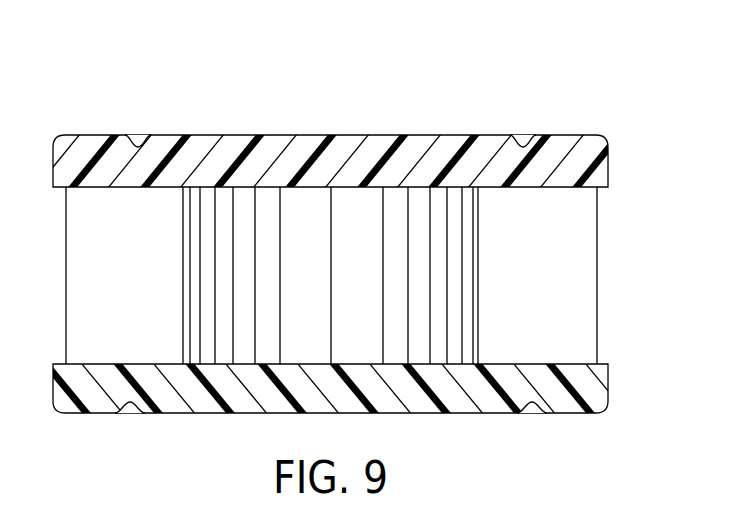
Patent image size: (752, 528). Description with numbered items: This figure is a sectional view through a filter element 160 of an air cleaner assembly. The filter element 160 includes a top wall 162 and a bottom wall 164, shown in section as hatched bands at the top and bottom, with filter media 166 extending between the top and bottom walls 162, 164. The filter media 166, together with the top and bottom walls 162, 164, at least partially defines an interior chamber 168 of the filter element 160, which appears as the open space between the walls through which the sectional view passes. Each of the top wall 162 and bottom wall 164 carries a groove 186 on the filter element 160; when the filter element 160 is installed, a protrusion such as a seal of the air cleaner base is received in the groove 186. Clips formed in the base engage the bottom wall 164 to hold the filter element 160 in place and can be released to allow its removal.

The filter element 160 is at (100, 92).
The top wall 162 is at (247, 135).
The bottom wall 164 is at (190, 413).
The filter media 166 is at (557, 268).
The interior chamber 168 is at (349, 210).
The groove 186 is at (523, 142).